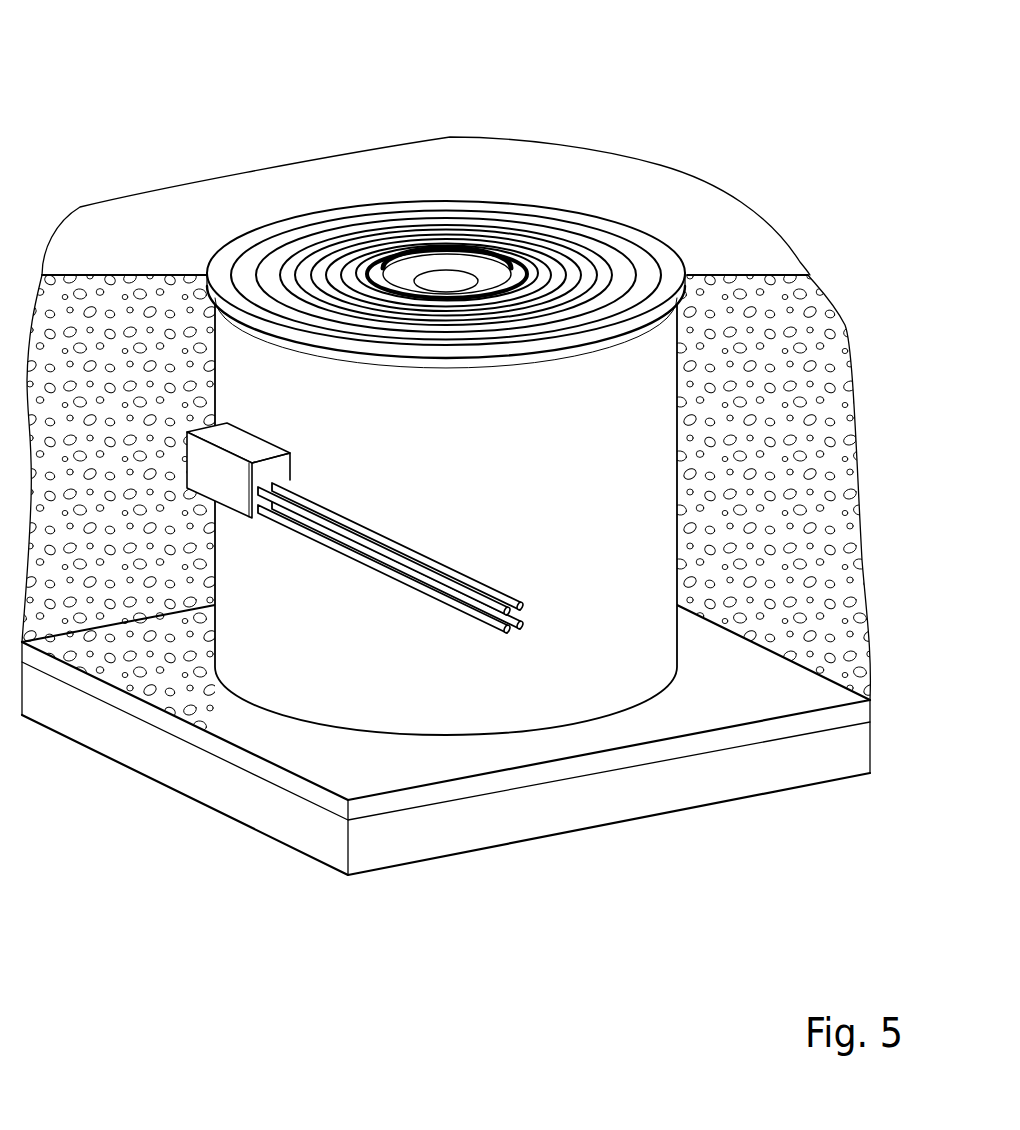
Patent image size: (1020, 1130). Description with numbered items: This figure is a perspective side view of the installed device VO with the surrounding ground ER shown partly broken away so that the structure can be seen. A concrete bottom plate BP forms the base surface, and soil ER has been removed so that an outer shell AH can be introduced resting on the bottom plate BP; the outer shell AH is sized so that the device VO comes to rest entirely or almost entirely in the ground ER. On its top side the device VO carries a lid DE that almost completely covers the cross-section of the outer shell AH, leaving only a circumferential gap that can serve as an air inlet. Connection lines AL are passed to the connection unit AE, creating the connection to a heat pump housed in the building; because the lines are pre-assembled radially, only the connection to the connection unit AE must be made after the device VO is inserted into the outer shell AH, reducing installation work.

The device VO is at (70, 815).
The ground (soil) ER is at (753, 310).
The bottom plate (concrete plate) BP is at (682, 782).
The outer shell AH is at (215, 603).
The lid DE is at (605, 278).
The connection unit AE is at (207, 433).
The connection lines AL is at (420, 603).